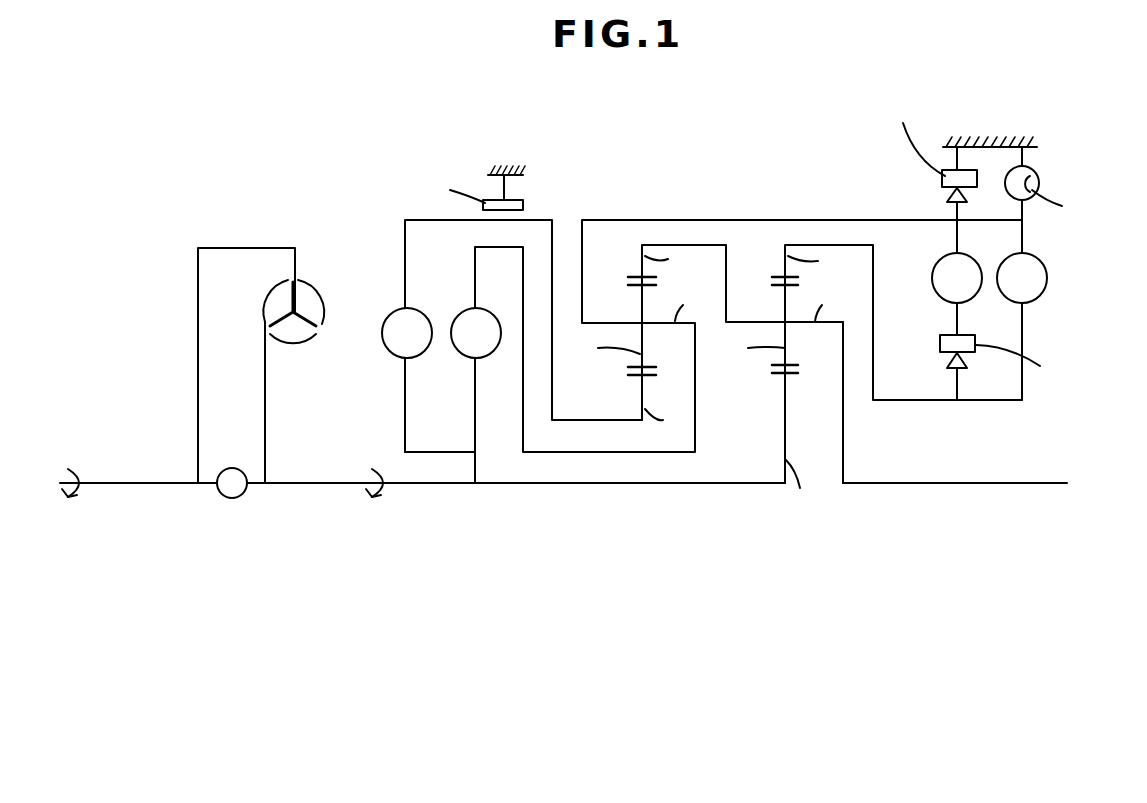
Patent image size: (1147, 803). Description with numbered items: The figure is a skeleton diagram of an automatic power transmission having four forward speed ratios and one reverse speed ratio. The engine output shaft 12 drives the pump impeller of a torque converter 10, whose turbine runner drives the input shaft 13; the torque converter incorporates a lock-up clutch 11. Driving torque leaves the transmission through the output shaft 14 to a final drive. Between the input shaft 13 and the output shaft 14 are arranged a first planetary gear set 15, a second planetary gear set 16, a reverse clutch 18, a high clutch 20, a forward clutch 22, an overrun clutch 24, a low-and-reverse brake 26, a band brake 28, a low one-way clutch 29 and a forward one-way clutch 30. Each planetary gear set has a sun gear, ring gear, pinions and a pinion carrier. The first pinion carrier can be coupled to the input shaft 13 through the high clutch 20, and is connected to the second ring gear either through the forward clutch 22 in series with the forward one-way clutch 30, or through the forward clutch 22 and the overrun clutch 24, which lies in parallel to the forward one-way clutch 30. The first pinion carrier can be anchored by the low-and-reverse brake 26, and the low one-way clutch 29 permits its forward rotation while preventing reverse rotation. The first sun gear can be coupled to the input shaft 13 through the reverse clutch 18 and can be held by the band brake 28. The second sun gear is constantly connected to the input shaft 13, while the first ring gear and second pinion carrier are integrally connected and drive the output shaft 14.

The torque converter 10 is at (320, 272).
The lock-up clutch 11 is at (233, 498).
The output shaft 12 is at (155, 483).
The input shaft 13 is at (335, 488).
The output shaft 14 is at (900, 482).
The first planetary gear set 15 is at (636, 243).
The second planetary gear set 16 is at (796, 243).
The reverse clutch 18 is at (386, 353).
The high clutch 20 is at (460, 360).
The forward clutch 22 is at (938, 290).
The overrun clutch 24 is at (1045, 278).
The low-and-reverse brake 26 is at (1040, 178).
The band brake 28 is at (506, 185).
The low one-way clutch 29 is at (942, 178).
The forward one-way clutch 30 is at (940, 343).